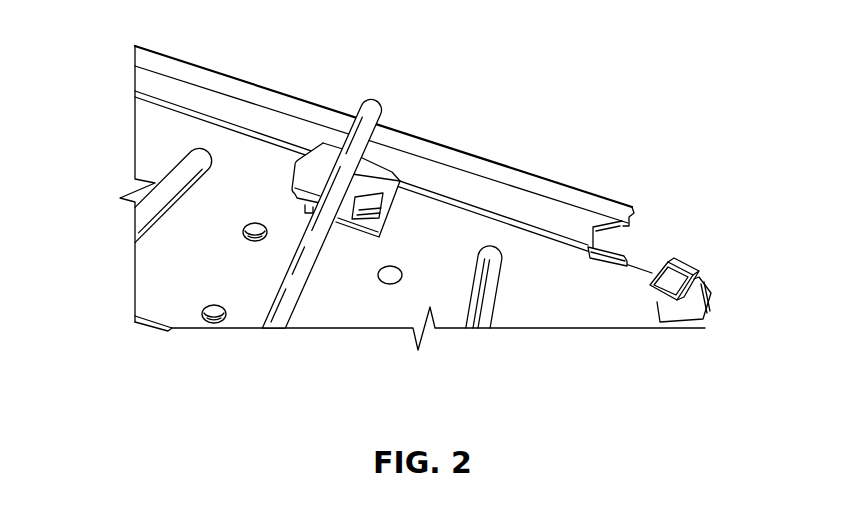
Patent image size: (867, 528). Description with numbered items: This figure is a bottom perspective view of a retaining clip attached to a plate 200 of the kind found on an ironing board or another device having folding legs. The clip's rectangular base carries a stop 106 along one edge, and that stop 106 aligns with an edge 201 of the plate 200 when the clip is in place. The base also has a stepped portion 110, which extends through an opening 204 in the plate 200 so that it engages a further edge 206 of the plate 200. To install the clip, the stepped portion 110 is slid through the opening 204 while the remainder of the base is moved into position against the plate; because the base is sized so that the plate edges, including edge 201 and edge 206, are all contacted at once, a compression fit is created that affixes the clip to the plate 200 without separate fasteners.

The plate 200 is at (267, 85).
The stepped portion 110 is at (364, 146).
The opening 204 is at (380, 182).
The edge 206 is at (320, 222).
The stop 106 is at (618, 248).
The edge 201 is at (652, 275).